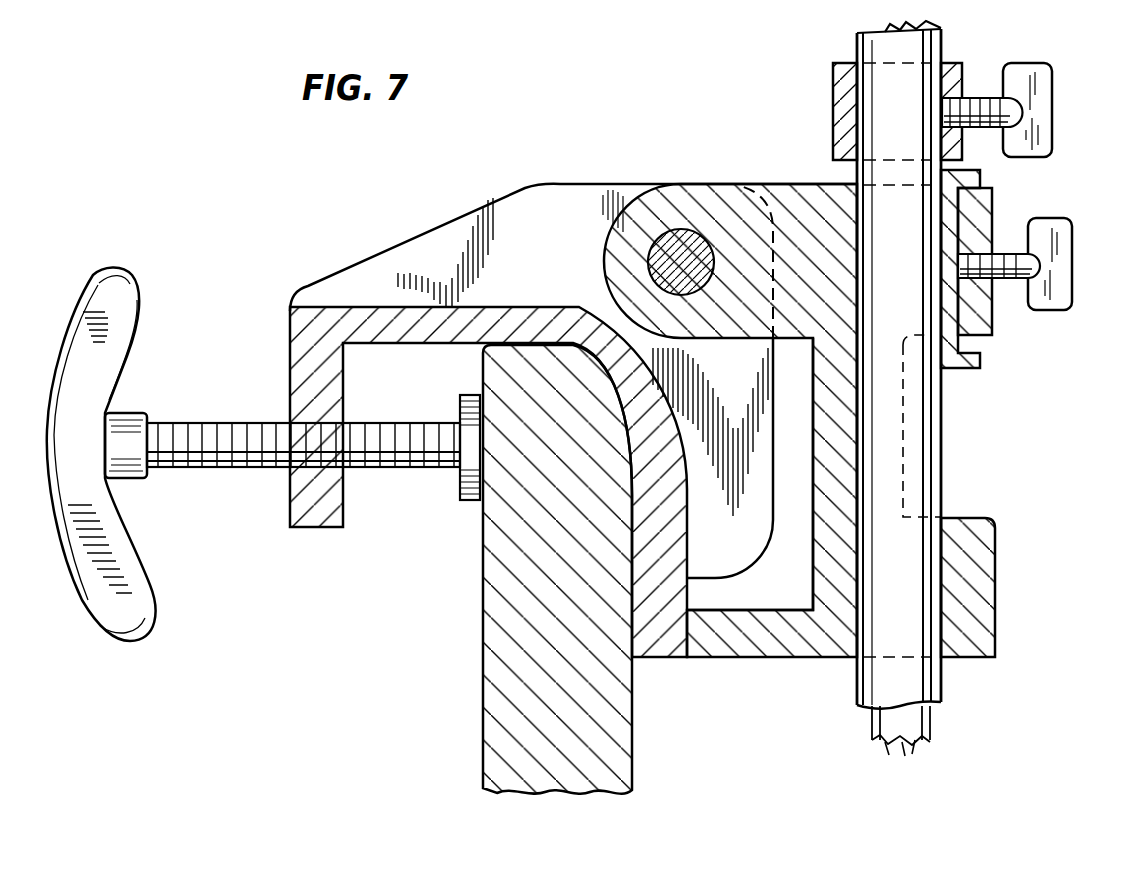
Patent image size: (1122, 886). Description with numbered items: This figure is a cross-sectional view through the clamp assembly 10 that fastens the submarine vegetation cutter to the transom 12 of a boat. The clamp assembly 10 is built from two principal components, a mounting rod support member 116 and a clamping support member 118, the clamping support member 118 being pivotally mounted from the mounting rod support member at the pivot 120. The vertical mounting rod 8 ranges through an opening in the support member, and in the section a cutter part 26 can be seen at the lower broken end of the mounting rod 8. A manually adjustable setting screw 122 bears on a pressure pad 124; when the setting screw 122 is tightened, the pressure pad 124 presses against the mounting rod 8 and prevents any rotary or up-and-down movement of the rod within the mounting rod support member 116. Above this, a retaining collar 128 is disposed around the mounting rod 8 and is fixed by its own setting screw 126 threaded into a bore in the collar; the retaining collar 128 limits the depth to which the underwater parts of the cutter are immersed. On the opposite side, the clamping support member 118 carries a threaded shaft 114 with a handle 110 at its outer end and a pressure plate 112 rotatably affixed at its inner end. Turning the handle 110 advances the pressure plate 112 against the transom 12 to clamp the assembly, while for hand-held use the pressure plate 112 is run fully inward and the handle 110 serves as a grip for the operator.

The clamp assembly 10 is at (1068, 370).
The mounting rod 8 is at (931, 440).
The transom 12 is at (620, 714).
The bit 26 is at (912, 758).
The handle 110 is at (116, 572).
The pressure plate 112 is at (470, 500).
The threaded shaft 114 is at (400, 462).
The mounting rod support member 116 is at (980, 552).
The clamping support member 118 is at (668, 652).
The pivot 120 is at (660, 253).
The setting screw 122 is at (1060, 237).
The pressure pad 124 is at (978, 367).
The setting screw 126 is at (1045, 105).
The retaining collar 128 is at (978, 58).